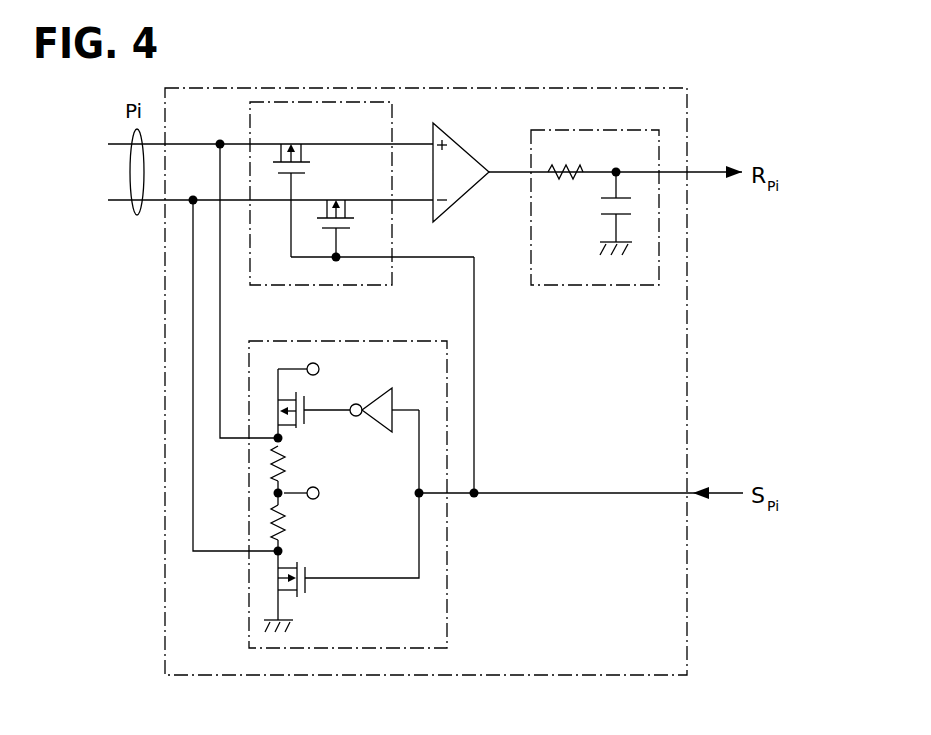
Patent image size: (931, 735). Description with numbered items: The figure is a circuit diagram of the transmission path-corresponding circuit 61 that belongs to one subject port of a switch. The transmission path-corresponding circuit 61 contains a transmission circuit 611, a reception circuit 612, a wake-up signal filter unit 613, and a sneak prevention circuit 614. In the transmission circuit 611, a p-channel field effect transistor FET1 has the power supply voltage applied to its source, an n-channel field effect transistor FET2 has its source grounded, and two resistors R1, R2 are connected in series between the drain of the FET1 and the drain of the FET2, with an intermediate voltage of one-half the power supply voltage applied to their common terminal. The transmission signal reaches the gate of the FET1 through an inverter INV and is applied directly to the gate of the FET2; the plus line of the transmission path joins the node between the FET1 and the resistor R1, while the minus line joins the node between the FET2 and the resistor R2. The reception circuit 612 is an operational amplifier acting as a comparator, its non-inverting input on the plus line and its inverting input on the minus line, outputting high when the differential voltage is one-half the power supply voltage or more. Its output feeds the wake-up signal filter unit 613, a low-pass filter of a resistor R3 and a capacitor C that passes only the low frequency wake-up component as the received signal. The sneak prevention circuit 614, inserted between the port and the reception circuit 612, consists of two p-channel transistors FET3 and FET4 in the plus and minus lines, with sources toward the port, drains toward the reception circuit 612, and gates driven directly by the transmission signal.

The transmission path-corresponding circuit 61 is at (531, 88).
The transmission circuit 611 is at (376, 494).
The reception circuit 612 is at (460, 198).
The wake-up signal filter unit 613 is at (595, 226).
The sneak prevention circuit 614 is at (362, 212).
The p-channel field effect transistor FET1 is at (306, 420).
The n-channel field effect transistor FET2 is at (307, 587).
The p-channel field effect transistor FET3 is at (292, 131).
The p-channel field effect transistor FET4 is at (331, 189).
The resistor R1 is at (286, 467).
The resistor R2 is at (286, 523).
The resistor R3 is at (558, 179).
The capacitor C is at (610, 216).
The inverter INV is at (394, 393).